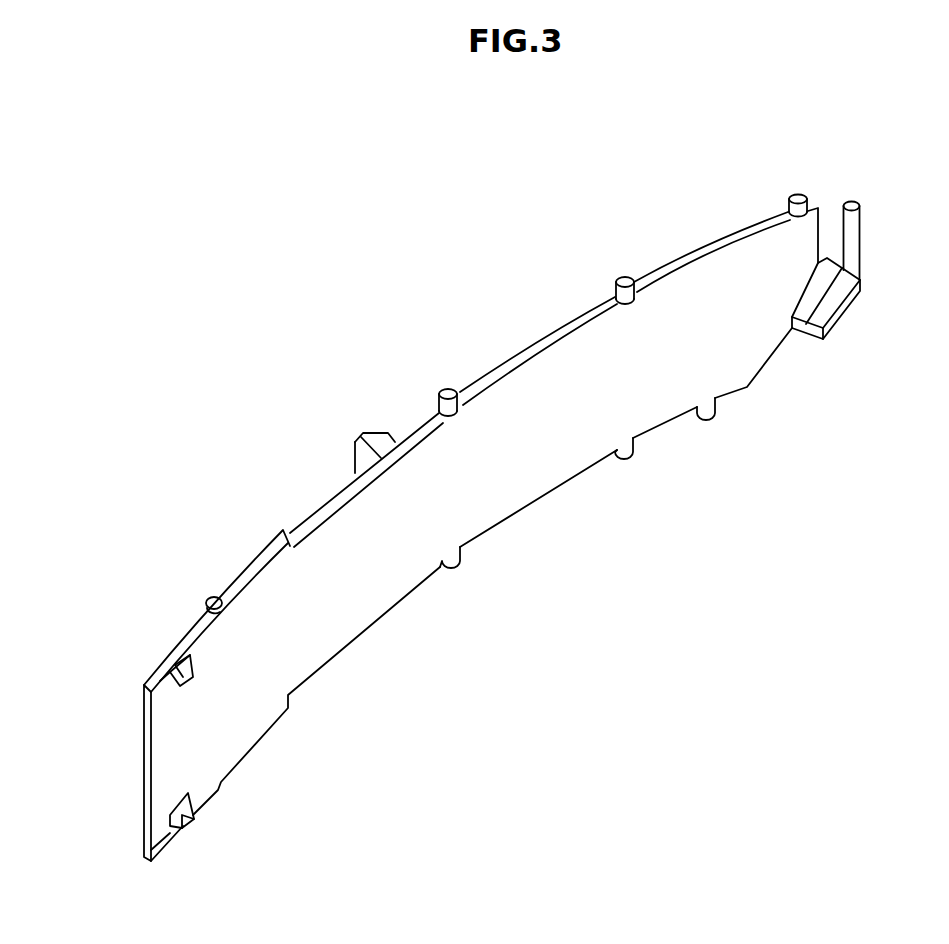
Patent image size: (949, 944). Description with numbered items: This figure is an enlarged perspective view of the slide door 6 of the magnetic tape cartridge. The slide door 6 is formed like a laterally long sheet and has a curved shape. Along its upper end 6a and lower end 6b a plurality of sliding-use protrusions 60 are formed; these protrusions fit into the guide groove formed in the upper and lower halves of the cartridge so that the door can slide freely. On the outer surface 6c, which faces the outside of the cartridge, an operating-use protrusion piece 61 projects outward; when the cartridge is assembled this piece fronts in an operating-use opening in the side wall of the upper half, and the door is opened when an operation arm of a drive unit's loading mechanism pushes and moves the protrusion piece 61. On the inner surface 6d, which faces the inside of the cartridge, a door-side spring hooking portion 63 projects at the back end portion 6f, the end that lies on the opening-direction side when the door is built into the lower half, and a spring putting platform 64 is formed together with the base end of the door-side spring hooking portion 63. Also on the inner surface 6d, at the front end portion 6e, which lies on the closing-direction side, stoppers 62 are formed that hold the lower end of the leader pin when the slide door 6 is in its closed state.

The slide door 6 is at (237, 362).
The upper end 6a is at (535, 335).
The lower end 6b is at (540, 498).
The outer surface 6c is at (303, 514).
The inner surface 6d is at (337, 580).
The front end portion 6e is at (170, 748).
The back end portion 6f is at (727, 338).
The sliding-use protrusions 60 is at (795, 198).
The operating-use protrusion piece 61 is at (375, 437).
The stoppers 62 is at (178, 657).
The door-side spring hooking portion 63 is at (853, 238).
The spring putting platform 64 is at (833, 327).